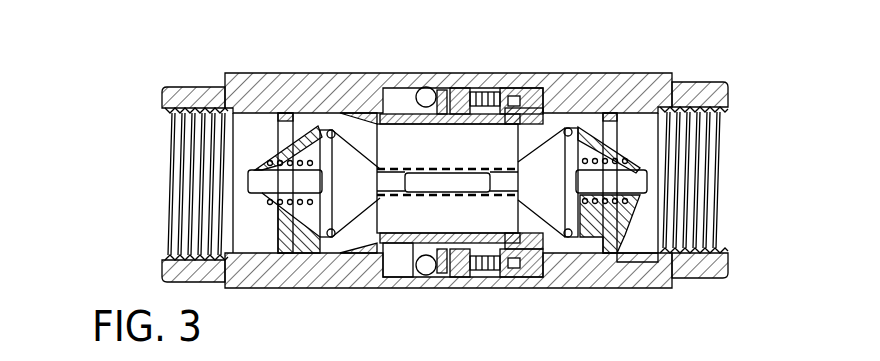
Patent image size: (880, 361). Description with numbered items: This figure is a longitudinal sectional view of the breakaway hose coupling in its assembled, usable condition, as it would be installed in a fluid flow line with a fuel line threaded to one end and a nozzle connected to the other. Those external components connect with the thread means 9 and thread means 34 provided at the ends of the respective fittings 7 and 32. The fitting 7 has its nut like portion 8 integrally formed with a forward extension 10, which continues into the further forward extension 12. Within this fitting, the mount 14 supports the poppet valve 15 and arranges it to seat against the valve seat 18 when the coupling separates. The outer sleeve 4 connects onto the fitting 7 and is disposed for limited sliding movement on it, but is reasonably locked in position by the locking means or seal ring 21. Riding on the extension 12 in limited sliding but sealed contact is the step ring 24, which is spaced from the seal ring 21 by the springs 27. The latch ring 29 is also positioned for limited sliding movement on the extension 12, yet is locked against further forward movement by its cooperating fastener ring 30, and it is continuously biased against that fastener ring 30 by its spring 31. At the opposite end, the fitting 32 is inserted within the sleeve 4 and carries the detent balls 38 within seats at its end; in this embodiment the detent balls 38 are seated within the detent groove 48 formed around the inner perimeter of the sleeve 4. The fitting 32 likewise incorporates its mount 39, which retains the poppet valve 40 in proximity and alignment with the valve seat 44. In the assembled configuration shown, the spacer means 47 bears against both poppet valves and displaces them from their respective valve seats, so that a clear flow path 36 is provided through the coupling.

The outer sleeve 4 is at (583, 76).
The fitting 7 is at (700, 83).
The nut like portion 8 is at (707, 278).
The thread means 9 is at (707, 230).
The forward extension 10 is at (645, 268).
The further forward extension 12 is at (392, 252).
The mount 14 is at (605, 253).
The poppet valve 15 is at (548, 240).
The valve seat 18 is at (537, 130).
The seal ring 21 is at (538, 90).
The step ring 24 is at (485, 92).
The springs 27 is at (498, 278).
The latch ring 29 is at (458, 100).
The fastener ring 30 is at (442, 276).
The spring 31 is at (456, 278).
The fitting 32 is at (193, 80).
The thread means 34 is at (182, 235).
The flow path 36 is at (236, 149).
The detent balls 38 is at (421, 89).
The mount 39 is at (277, 140).
The poppet valve 40 is at (345, 250).
The valve seat 44 is at (345, 122).
The spacer means 47 is at (403, 170).
The detent groove 48 is at (437, 90).